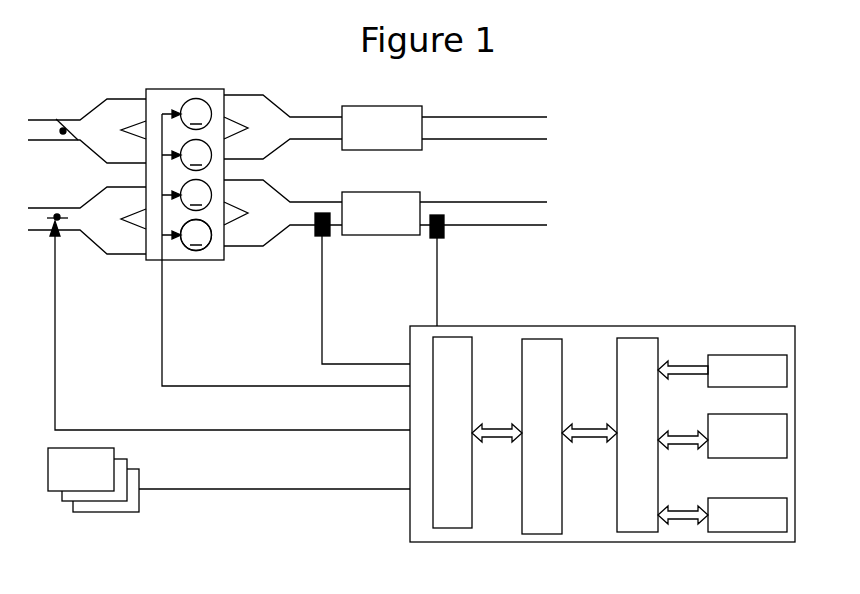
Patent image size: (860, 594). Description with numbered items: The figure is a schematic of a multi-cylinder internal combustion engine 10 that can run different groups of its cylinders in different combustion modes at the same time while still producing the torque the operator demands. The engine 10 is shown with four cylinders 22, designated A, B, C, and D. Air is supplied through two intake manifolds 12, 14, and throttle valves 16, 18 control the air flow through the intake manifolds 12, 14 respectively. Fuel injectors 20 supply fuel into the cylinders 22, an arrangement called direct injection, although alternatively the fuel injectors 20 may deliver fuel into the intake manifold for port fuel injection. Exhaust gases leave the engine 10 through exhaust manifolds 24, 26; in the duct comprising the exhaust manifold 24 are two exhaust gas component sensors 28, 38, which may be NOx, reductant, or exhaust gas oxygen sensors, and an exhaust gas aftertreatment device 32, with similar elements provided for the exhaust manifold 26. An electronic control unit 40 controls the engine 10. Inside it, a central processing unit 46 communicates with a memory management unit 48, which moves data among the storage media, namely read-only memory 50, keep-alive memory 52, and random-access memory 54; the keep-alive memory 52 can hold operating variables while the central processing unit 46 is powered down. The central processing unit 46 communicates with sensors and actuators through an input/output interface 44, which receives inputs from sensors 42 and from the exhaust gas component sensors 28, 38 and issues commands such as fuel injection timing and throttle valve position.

The internal combustion engine 10 is at (212, 89).
The intake manifold 12 is at (113, 232).
The intake manifold 14 is at (113, 146).
The throttle valve 16 is at (52, 212).
The throttle valve 18 is at (60, 126).
The fuel injectors 20 is at (170, 112).
The cylinders 22 is at (193, 252).
The exhaust manifold 24 is at (280, 227).
The exhaust manifold 26 is at (280, 137).
The exhaust gas component sensor 28 is at (444, 232).
The exhaust gas aftertreatment device 32 is at (400, 225).
The exhaust gas component sensor 38 is at (315, 230).
The electronic control unit 40 is at (683, 313).
The sensors 42 is at (135, 512).
The input/output interface 44 is at (450, 337).
The central processing unit 46 is at (532, 339).
The memory management unit 48 is at (635, 338).
The read-only memory 50 is at (738, 355).
The keep-alive memory 52 is at (745, 458).
The random-access memory 54 is at (735, 497).